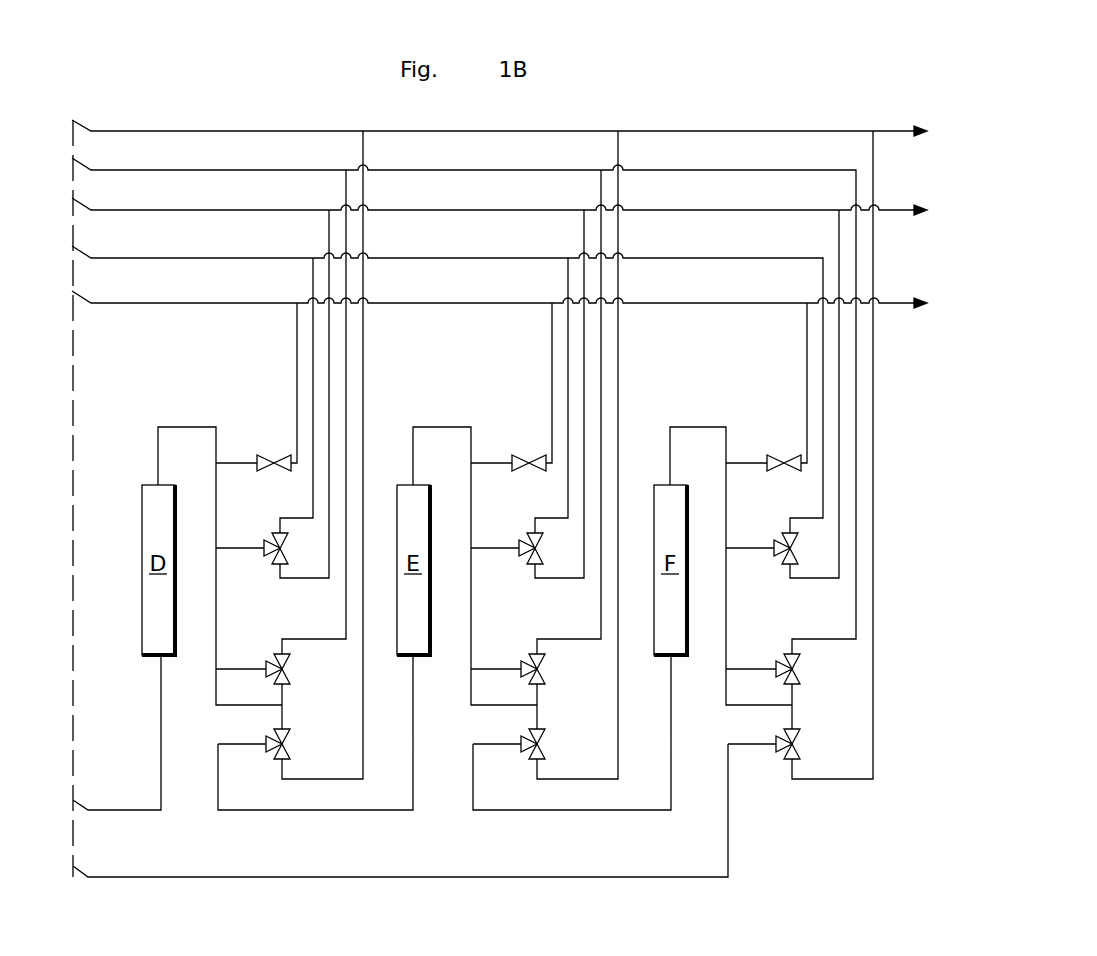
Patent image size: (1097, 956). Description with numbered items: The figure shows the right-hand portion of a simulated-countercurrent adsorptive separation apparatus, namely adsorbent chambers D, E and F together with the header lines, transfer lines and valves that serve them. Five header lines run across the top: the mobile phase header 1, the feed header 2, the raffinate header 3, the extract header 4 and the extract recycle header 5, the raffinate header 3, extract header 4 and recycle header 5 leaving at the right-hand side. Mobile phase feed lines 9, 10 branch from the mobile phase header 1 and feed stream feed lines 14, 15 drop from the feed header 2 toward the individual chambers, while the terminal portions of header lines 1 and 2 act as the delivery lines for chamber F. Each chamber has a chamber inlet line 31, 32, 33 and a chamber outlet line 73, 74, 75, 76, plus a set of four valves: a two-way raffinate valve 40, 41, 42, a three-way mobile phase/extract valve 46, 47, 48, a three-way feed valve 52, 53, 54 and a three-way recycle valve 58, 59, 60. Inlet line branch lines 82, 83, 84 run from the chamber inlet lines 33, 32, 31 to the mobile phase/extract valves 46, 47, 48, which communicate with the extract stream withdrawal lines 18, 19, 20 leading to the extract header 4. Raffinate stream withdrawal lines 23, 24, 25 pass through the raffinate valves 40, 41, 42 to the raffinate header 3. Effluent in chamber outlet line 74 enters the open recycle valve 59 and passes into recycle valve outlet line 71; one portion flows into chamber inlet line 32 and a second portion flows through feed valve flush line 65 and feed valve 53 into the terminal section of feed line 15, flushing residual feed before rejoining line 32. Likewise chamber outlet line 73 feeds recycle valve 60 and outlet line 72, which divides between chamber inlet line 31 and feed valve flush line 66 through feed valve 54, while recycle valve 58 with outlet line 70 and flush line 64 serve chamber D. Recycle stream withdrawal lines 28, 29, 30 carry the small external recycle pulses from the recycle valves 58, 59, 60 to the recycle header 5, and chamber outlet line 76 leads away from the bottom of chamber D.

The mobile phase header 1 is at (537, 257).
The feed header 2 is at (539, 169).
The raffinate header 3 is at (128, 304).
The extract header 4 is at (179, 209).
The extract recycle header 5 is at (182, 130).
The mobile phase feed line 9 is at (313, 491).
The mobile phase feed line 10 is at (549, 395).
The feed stream feed line 14 is at (346, 621).
The feed stream feed line 15 is at (536, 419).
The extract stream withdrawal line 18 is at (318, 578).
The extract stream withdrawal line 19 is at (559, 410).
The extract stream withdrawal line 20 is at (814, 410).
The raffinate stream withdrawal line 23 is at (297, 378).
The raffinate stream withdrawal line 24 is at (531, 383).
The raffinate stream withdrawal line 25 is at (786, 383).
The recycle stream withdrawal line 28 is at (363, 757).
The recycle stream withdrawal line 29 is at (577, 455).
The recycle stream withdrawal line 30 is at (832, 455).
The chamber inlet line 31 is at (731, 564).
The chamber inlet line 32 is at (475, 564).
The chamber inlet line 33 is at (166, 427).
The raffinate valve 40 is at (274, 455).
The raffinate valve 41 is at (508, 443).
The raffinate valve 42 is at (763, 443).
The mobile phase/extract valve 46 is at (271, 553).
The mobile phase/extract valve 47 is at (518, 564).
The mobile phase/extract valve 48 is at (773, 564).
The feed valve 52 is at (291, 668).
The feed valve 53 is at (556, 669).
The feed valve 54 is at (811, 669).
The recycle valve 58 is at (270, 753).
The recycle valve 59 is at (515, 758).
The recycle valve 60 is at (770, 758).
The feed valve flush line 64 is at (283, 694).
The feed valve flush line 65 is at (564, 697).
The feed valve flush line 66 is at (819, 697).
The recycle valve outlet line 70 is at (283, 722).
The recycle valve outlet line 71 is at (564, 720).
The recycle valve outlet line 72 is at (819, 720).
The chamber outlet line 73 is at (424, 810).
The chamber outlet line 74 is at (587, 749).
The chamber outlet line 75 is at (301, 810).
The chamber outlet line 76 is at (128, 811).
The inlet line branch line 82 is at (246, 548).
The inlet line branch line 83 is at (495, 529).
The inlet line branch line 84 is at (750, 529).